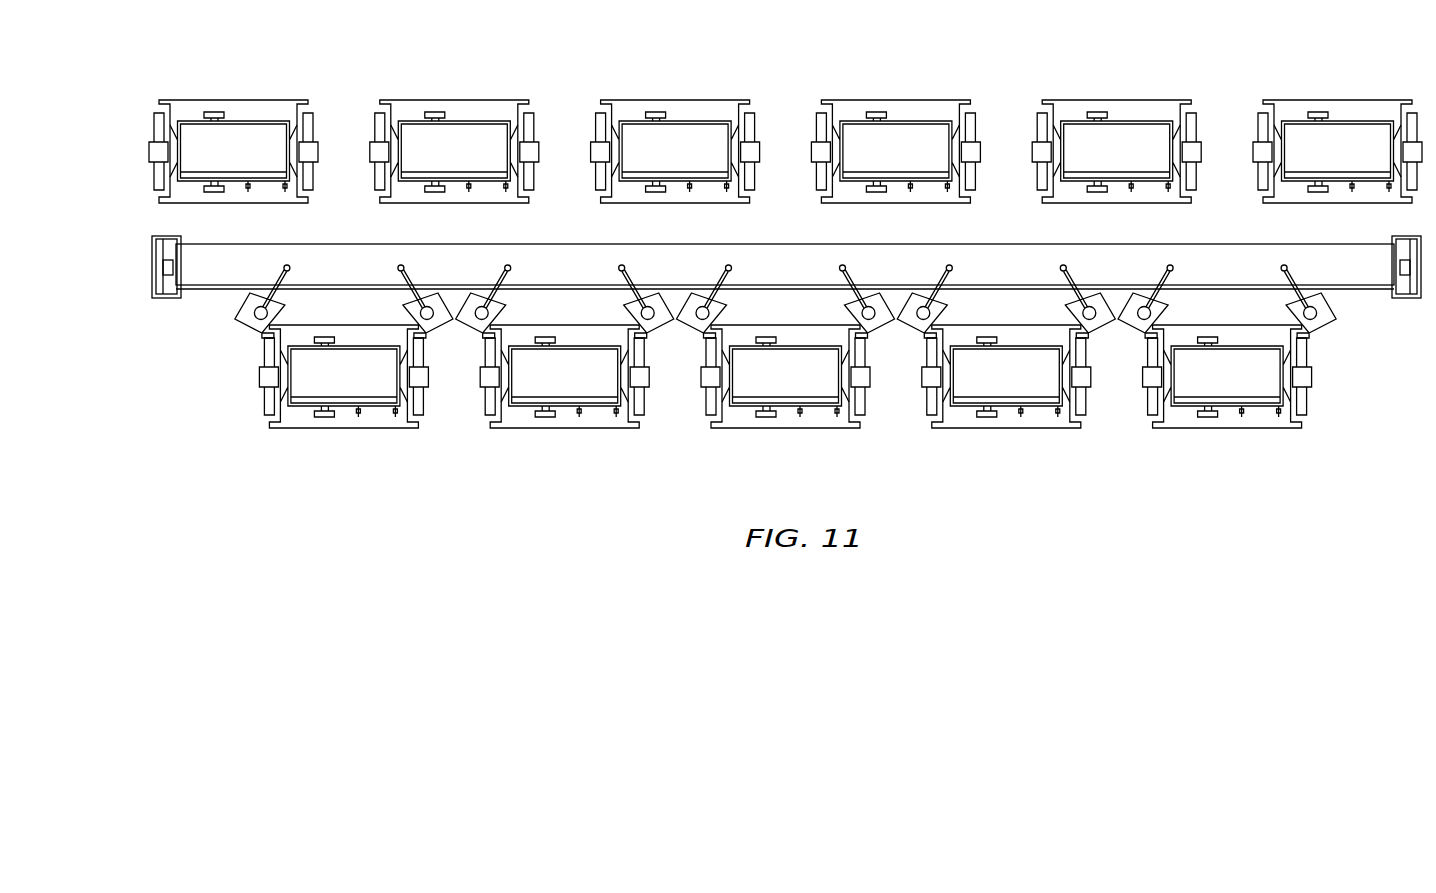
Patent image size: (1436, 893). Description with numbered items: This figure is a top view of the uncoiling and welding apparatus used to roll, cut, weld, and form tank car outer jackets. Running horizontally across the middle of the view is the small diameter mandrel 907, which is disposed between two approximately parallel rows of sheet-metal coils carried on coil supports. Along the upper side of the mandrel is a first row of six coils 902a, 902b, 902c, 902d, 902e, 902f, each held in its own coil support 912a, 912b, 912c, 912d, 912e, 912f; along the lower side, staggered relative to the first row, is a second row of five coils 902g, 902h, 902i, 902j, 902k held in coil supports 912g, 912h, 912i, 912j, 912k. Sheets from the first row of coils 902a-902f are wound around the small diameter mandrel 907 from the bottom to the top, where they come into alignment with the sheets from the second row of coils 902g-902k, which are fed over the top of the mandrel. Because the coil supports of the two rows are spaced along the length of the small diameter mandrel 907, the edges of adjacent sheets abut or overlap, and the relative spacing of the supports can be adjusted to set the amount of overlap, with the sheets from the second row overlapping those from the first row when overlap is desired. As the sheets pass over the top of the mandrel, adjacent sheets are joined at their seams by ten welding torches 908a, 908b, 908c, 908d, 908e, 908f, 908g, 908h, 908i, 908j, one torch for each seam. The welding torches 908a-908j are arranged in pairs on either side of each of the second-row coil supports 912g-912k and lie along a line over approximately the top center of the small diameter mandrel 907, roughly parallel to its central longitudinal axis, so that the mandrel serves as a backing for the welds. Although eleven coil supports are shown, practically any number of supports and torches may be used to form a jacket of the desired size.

The coil 902a is at (192, 121).
The coil 902b is at (413, 121).
The coil 902c is at (634, 121).
The coil 902d is at (855, 121).
The coil 902e is at (1076, 121).
The coil 902f is at (1296, 121).
The coil 902g is at (303, 406).
The coil 902h is at (524, 406).
The coil 902i is at (744, 406).
The coil 902j is at (965, 406).
The coil 902k is at (1186, 406).
The coil support 912a is at (260, 100).
The coil support 912b is at (481, 100).
The coil support 912c is at (702, 100).
The coil support 912d is at (923, 100).
The coil support 912e is at (1144, 100).
The coil support 912f is at (1364, 100).
The coil support 912g is at (369, 428).
The coil support 912h is at (590, 428).
The coil support 912i is at (810, 428).
The coil support 912j is at (1031, 428).
The coil support 912k is at (1252, 428).
The small diameter mandrel 907 is at (803, 276).
The welding torch 908a is at (284, 268).
The welding torch 908b is at (398, 268).
The welding torch 908c is at (505, 268).
The welding torch 908d is at (619, 268).
The welding torch 908e is at (726, 268).
The welding torch 908f is at (846, 268).
The welding torch 908g is at (952, 268).
The welding torch 908h is at (1066, 268).
The welding torch 908i is at (1173, 268).
The welding torch 908j is at (1287, 268).